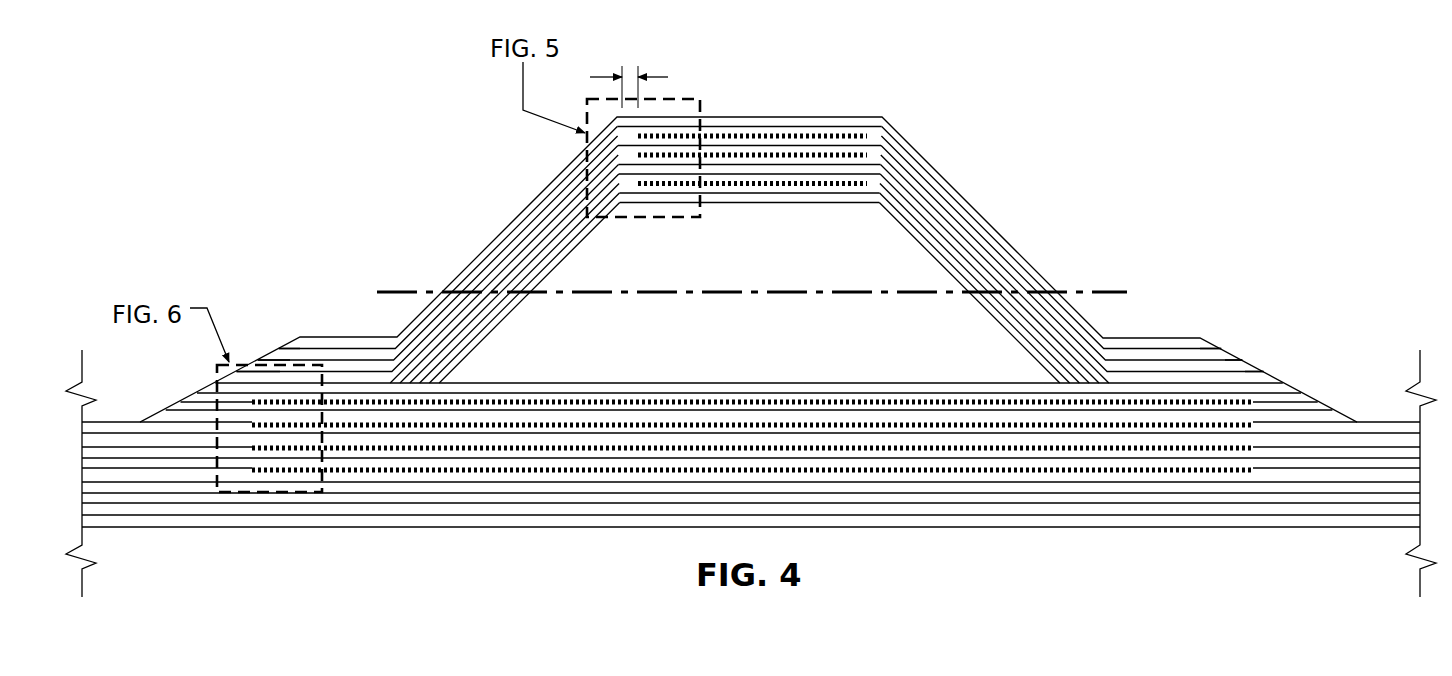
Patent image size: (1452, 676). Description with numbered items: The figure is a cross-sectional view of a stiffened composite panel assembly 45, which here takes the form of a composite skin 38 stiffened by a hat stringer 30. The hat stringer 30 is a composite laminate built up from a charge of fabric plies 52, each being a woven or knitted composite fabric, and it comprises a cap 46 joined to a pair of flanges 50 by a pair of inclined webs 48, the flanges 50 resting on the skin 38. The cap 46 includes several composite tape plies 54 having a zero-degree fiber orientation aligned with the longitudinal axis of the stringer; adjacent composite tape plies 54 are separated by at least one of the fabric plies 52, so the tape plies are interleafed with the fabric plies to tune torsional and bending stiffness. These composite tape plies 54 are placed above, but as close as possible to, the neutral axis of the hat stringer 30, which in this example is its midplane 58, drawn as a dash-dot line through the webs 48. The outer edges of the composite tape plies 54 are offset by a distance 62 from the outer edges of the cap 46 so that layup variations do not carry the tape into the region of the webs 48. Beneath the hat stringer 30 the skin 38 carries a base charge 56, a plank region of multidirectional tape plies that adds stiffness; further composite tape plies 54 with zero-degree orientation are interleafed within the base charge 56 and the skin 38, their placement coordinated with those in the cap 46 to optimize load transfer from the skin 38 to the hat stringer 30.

The hat stringer 30 is at (729, 249).
The composite skin 38 is at (240, 528).
The stiffened composite panel assembly 45 is at (1200, 122).
The cap 46 is at (747, 116).
The webs 48 is at (993, 307).
The flanges 50 is at (350, 336).
The fabric plies 52 is at (868, 121).
The composite tape plies 54 is at (770, 136).
The base charge 56 is at (1326, 398).
The midplane 58 is at (393, 292).
The offset distance 62 is at (660, 74).